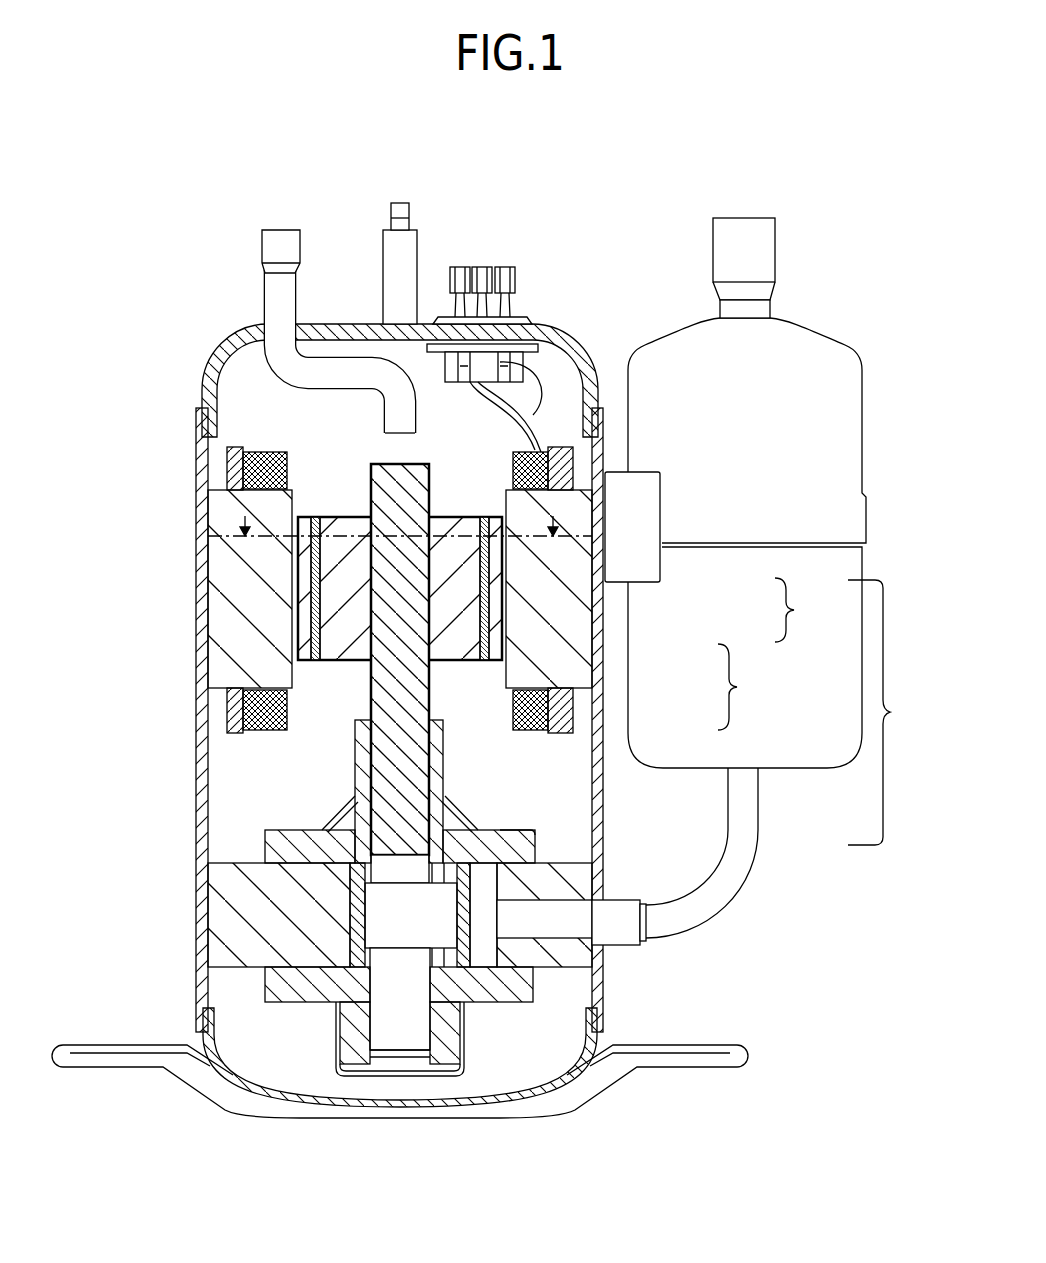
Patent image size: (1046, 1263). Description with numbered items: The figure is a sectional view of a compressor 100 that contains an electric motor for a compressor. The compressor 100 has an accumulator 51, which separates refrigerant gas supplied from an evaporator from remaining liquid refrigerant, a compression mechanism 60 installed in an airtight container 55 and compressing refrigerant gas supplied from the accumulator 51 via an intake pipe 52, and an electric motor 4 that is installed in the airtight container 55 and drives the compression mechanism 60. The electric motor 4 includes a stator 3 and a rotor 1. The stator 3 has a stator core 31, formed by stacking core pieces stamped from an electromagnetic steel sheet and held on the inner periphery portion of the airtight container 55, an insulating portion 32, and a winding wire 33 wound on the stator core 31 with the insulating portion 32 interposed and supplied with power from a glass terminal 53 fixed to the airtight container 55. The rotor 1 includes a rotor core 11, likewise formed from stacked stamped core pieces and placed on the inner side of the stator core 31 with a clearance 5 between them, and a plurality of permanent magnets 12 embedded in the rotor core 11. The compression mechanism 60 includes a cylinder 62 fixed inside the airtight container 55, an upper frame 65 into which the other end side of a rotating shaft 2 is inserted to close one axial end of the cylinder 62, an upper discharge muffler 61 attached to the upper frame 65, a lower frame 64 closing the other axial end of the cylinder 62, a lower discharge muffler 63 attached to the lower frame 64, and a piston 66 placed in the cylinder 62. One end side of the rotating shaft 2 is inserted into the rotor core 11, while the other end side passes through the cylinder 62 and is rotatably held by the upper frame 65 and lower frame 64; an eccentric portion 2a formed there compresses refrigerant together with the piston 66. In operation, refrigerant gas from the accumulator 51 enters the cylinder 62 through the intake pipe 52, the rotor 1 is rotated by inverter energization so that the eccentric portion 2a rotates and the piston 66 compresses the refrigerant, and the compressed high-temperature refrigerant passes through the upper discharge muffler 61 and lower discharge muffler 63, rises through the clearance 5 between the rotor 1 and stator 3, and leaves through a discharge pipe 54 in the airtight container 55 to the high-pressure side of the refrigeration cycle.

The compressor 100 is at (880, 163).
The rotor 1 is at (554, 588).
The rotor core 11 is at (455, 602).
The permanent magnets 12 is at (485, 630).
The rotating shaft 2 is at (589, 760).
The eccentric portion 2a is at (417, 912).
The stator 3 is at (481, 590).
The stator core 31 is at (553, 665).
The insulating portion 32 is at (560, 700).
The winding wire 33 is at (567, 718).
The electric motor 4 is at (559, 752).
The clearance 5 is at (505, 510).
The accumulator 51 is at (862, 462).
The intake pipe 52 is at (743, 900).
The glass terminal 53 is at (492, 267).
The discharge pipe 54 is at (265, 292).
The airtight container 55 is at (212, 358).
The compression mechanism 60 is at (391, 955).
The upper discharge muffler 61 is at (338, 815).
The cylinder 62 is at (235, 862).
The lower discharge muffler 63 is at (338, 1027).
The lower frame 64 is at (485, 990).
The upper frame 65 is at (518, 855).
The piston 66 is at (348, 922).